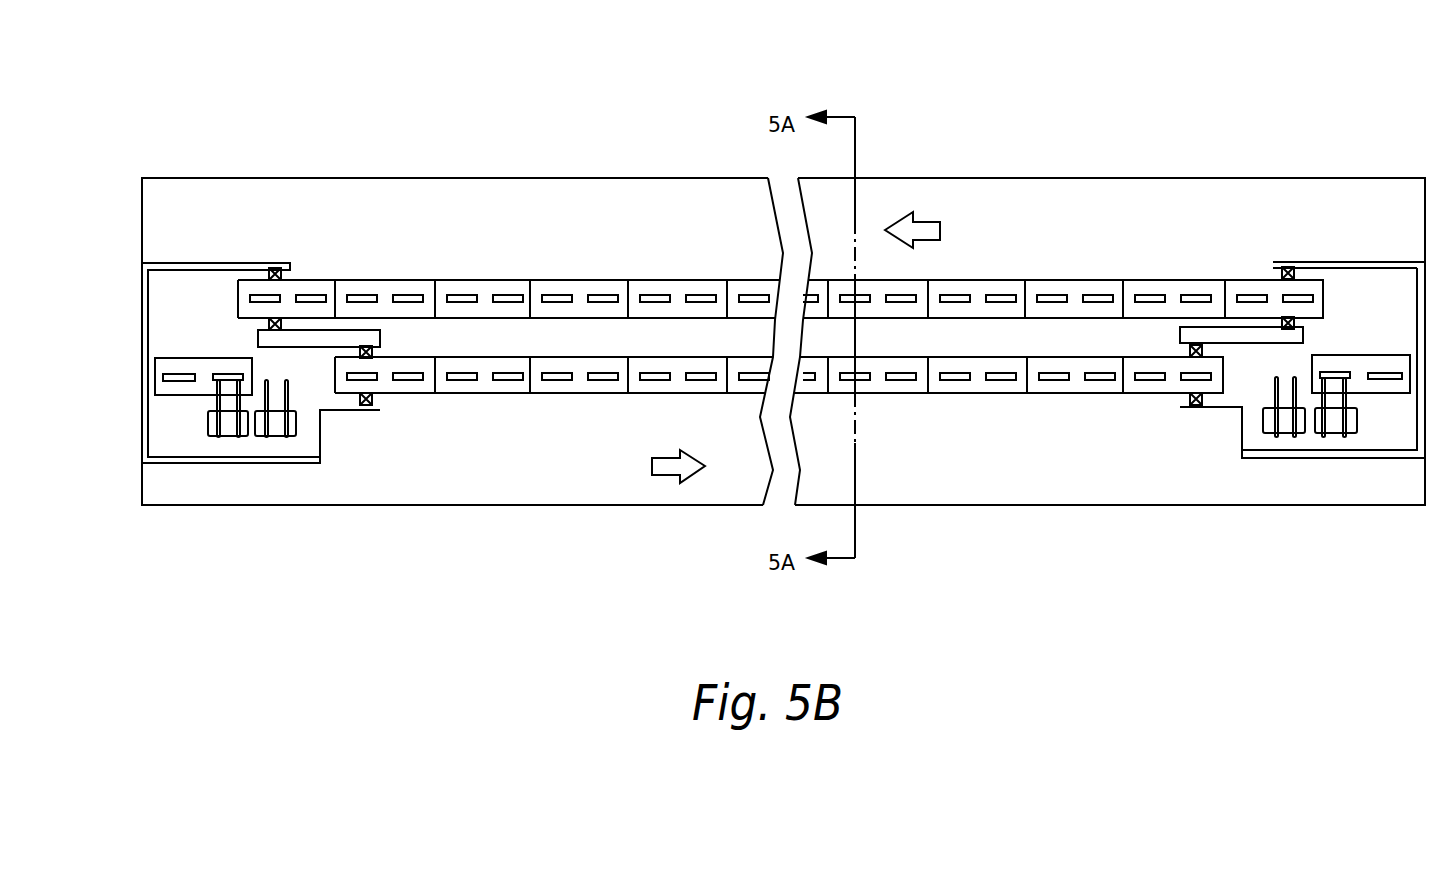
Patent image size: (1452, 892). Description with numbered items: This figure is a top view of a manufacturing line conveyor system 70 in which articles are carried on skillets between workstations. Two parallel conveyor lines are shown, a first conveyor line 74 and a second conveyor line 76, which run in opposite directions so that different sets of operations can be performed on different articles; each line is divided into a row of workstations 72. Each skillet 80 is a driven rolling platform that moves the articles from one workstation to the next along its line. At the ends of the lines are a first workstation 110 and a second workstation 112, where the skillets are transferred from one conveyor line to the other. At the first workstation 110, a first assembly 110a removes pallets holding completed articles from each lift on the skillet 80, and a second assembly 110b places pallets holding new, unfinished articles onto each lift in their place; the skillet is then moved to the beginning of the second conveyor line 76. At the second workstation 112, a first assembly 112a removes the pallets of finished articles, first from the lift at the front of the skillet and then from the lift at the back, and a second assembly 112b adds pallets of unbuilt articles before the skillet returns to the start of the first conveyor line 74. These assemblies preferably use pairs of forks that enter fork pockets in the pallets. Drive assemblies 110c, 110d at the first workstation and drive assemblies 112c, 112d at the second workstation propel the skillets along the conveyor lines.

The conveyor system 70 is at (1032, 119).
The workstations 72 is at (388, 280).
The first conveyor line 74 is at (485, 228).
The second conveyor line 76 is at (903, 432).
The skillet 80 is at (203, 357).
The first workstation 110 is at (322, 405).
The first assembly 110a is at (227, 437).
The second assembly 110b is at (275, 437).
The drive assembly 110c is at (282, 326).
The drive assembly 110d is at (374, 352).
The second workstation 112 is at (1271, 349).
The first assembly 112a is at (1284, 437).
The second assembly 112b is at (1335, 437).
The drive assembly 112c is at (1283, 321).
The drive assembly 112d is at (1193, 352).